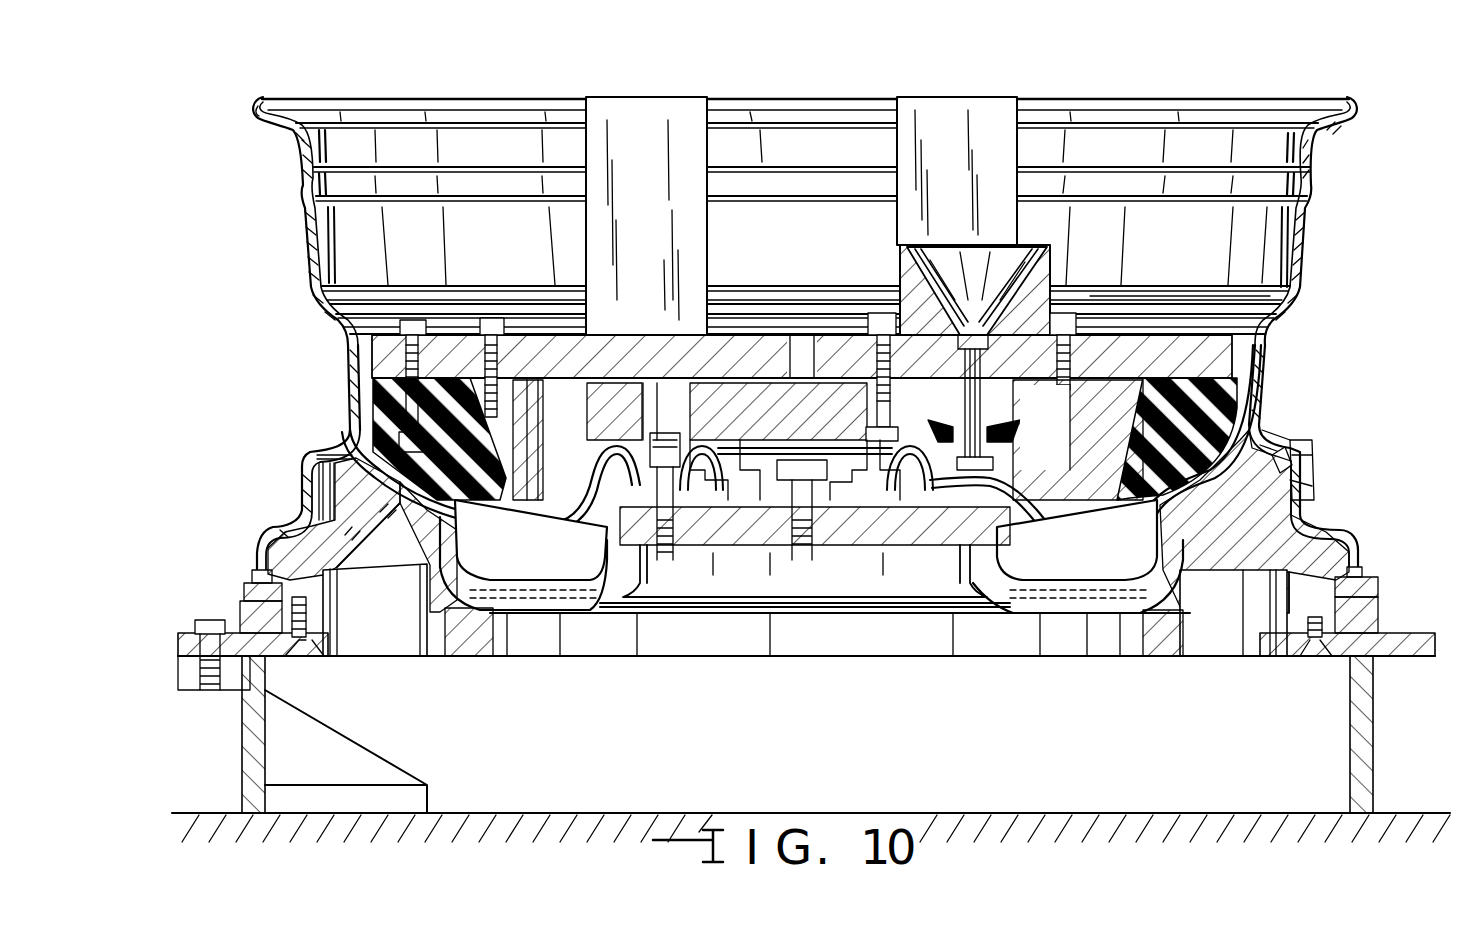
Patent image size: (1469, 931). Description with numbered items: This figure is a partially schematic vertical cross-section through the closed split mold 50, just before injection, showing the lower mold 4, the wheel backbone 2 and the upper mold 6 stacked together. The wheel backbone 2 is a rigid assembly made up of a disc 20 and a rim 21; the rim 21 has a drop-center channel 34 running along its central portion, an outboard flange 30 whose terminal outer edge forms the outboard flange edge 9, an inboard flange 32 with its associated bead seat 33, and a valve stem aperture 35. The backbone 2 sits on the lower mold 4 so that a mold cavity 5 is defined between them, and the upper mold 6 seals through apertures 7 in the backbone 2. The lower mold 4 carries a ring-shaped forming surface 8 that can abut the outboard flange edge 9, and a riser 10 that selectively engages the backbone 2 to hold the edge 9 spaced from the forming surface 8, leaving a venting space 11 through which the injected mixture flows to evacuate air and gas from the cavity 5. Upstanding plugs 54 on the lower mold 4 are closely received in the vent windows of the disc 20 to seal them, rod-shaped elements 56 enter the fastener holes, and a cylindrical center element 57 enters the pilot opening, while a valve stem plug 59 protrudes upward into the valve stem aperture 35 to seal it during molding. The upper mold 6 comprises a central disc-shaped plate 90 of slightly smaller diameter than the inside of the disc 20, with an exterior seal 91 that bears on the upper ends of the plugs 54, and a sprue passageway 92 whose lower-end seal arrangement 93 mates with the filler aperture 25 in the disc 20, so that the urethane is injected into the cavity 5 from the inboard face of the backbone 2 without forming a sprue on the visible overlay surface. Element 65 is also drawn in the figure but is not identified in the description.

The wheel backbone 2 is at (317, 311).
The lower mold 4 is at (1400, 633).
The mold cavity 5 is at (552, 572).
The upper mold 6 is at (537, 337).
The apertures 7 is at (360, 447).
The ring-shaped forming surface 8 is at (250, 572).
The outboard flange edge 9 is at (297, 563).
The riser 10 is at (240, 556).
The venting space 11 is at (1366, 561).
The disc 20 is at (1033, 485).
The rim 21 is at (1297, 143).
The filler aperture 25 is at (970, 467).
The outboard flange 30 is at (258, 538).
The inboard flange 32 is at (256, 118).
The bead seat 33 is at (296, 130).
The channel 34 is at (340, 372).
The valve stem aperture 35 is at (1258, 445).
The split mold 50 is at (1128, 290).
The plugs 54 is at (402, 555).
The rod-shaped elements 56 is at (662, 420).
The center element 57 is at (765, 490).
The valve stem plug 59 is at (1288, 490).
The clamp block 65 is at (242, 590).
The plate 90 is at (735, 360).
The exterior seal 91 is at (480, 362).
The sprue passageway 92 is at (982, 405).
The seal arrangement 93 is at (1013, 432).